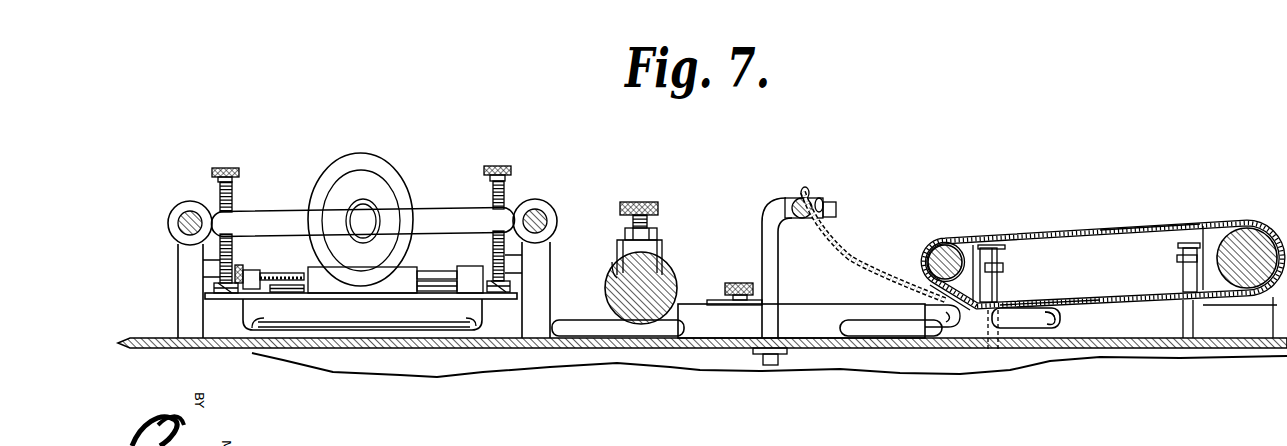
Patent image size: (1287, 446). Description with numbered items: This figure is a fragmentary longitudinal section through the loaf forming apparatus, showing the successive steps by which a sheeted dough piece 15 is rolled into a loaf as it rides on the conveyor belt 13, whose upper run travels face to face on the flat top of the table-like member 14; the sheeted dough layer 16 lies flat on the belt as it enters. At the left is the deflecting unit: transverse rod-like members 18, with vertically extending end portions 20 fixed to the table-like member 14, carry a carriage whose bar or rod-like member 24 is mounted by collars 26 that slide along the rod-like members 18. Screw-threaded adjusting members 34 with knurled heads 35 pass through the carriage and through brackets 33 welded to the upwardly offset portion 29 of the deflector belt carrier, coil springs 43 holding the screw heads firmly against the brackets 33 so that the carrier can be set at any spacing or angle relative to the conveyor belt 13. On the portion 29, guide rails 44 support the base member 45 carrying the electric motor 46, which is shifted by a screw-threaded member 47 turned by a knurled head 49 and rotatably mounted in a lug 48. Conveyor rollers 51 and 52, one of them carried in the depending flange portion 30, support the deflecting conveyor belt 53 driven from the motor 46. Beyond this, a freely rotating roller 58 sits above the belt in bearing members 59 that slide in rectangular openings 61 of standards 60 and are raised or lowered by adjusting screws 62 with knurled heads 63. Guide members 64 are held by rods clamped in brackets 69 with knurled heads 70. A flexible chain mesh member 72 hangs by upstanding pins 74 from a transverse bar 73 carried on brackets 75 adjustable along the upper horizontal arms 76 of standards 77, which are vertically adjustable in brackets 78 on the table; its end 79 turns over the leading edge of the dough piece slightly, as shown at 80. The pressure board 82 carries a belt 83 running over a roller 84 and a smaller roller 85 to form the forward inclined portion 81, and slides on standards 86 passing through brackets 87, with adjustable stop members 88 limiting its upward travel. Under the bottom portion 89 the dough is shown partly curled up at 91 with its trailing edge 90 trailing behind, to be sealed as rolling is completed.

The conveyor belt 13 is at (557, 348).
The table-like member 14 is at (670, 348).
The dough piece 15 is at (558, 320).
The guide pad 16 is at (577, 321).
The rod-like members 18 is at (179, 225).
The vertically extending end portion 20 is at (177, 312).
The bar or rod-like member 24 is at (435, 210).
The collars 26 is at (178, 207).
The portion of plate-like member 29 is at (465, 275).
The depending flange portion 30 is at (413, 312).
The brackets 33 is at (234, 299).
The screw-threaded adjusting members 34 is at (236, 194).
The knurled heads 35 is at (230, 169).
The coil springs 43 is at (213, 294).
The guide rails 44 is at (433, 279).
The base member 45 is at (406, 293).
The electric motor 46 is at (392, 172).
The screw-threaded member 47 is at (278, 272).
The lug 48 is at (250, 270).
The knurled head 49 is at (238, 264).
The conveyor roller 51 is at (265, 336).
The conveyor roller 52 is at (470, 322).
The conveyor belt 53 is at (356, 336).
The roller 58 is at (670, 257).
The bearing members 59 is at (617, 259).
The standards 60 is at (662, 238).
The rectangular openings 61 is at (622, 238).
The adjusting screws 62 is at (648, 221).
The knurled heads 63 is at (647, 203).
The guide members 64 is at (797, 308).
The brackets 69 is at (713, 300).
The knurled heads 70 is at (740, 282).
The flexible chain mesh member 72 is at (847, 250).
The transverse bar 73 is at (797, 197).
The upstanding pins 74 is at (807, 190).
The brackets 75 is at (822, 197).
The upper horizontal arms 76 is at (836, 207).
The standards 77 is at (770, 259).
The brackets 78 is at (770, 354).
The end of chain mesh member 79 is at (940, 296).
The turned-over end 80 is at (957, 343).
The forward inclined portion 81 is at (958, 243).
The pressure board 82 is at (1065, 231).
The belt 83 is at (1137, 227).
The roller 84 is at (1238, 236).
The smaller roller 85 is at (932, 242).
The standards 86 is at (998, 284).
The brackets 87 is at (1005, 266).
The adjustable stop members 88 is at (1007, 244).
The bottom portion 89 is at (1054, 300).
The trailing edge 90 is at (990, 339).
The partly curled-up portion 91 is at (1055, 314).